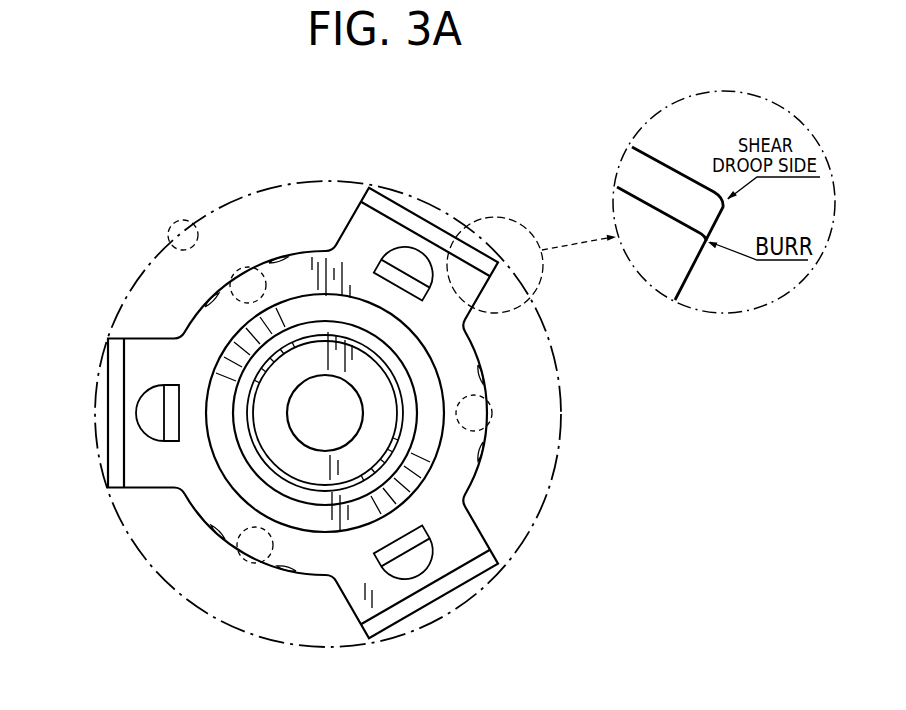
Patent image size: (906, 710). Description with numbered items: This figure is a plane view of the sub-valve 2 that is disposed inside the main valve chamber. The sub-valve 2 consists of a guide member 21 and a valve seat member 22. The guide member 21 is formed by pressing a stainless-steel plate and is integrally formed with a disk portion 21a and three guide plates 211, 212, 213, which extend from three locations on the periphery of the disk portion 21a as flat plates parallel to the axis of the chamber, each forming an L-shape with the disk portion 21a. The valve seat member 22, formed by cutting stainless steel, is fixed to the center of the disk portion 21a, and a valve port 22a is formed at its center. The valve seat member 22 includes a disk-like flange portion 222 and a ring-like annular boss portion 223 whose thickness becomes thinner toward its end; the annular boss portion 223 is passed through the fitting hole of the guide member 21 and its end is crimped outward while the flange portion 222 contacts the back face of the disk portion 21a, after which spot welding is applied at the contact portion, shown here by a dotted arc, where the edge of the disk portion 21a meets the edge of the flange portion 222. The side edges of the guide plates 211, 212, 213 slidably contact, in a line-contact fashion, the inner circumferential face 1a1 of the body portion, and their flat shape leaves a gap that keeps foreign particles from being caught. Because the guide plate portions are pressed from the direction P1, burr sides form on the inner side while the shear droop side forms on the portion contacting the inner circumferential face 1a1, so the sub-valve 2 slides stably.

The inner circumferential face 1a1 is at (190, 224).
The sub-valve 2 is at (573, 323).
The guide member 21 is at (181, 497).
The disk portion 21a is at (203, 332).
The guide plate 211 is at (112, 378).
The guide plate 212 is at (489, 574).
The guide plate 213 is at (441, 217).
The valve seat member 22 is at (349, 438).
The valve port 22a is at (349, 424).
The flange portion 222 is at (405, 546).
The annular boss portion 223 is at (433, 383).
The pressing direction P1 is at (86, 427).